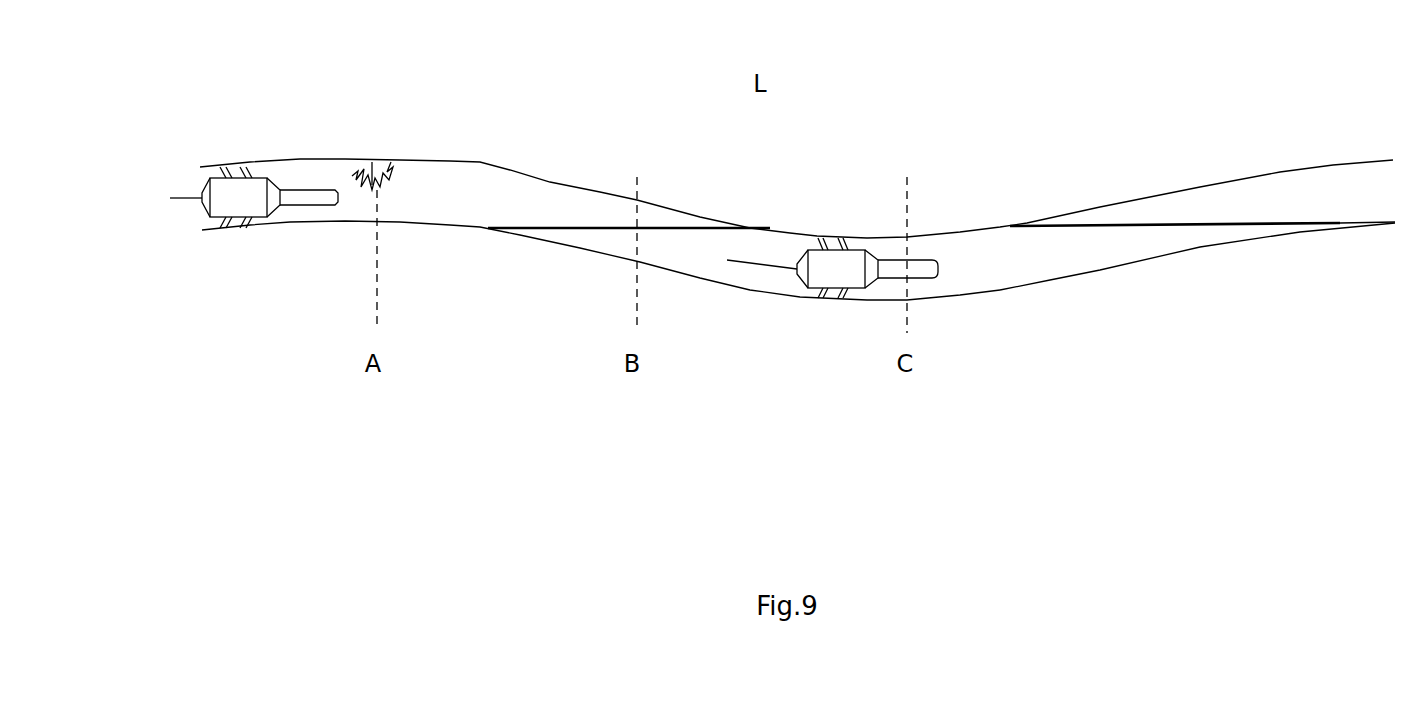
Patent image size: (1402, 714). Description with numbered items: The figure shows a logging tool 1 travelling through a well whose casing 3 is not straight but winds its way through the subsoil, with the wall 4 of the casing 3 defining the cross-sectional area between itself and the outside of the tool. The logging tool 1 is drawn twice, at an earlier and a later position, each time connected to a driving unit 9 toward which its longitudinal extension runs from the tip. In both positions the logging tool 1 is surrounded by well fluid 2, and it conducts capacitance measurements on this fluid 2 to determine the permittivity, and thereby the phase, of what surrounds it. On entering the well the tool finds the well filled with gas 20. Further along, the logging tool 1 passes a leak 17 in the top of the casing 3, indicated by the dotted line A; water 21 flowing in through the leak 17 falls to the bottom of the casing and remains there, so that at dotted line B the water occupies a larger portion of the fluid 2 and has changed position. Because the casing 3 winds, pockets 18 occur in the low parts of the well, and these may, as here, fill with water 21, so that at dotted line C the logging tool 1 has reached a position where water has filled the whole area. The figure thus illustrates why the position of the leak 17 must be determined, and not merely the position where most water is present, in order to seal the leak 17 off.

The logging tool 1 is at (315, 198).
The well fluid 2 is at (421, 204).
The casing 3 is at (537, 202).
The wall 4 is at (498, 167).
The driving unit 9 is at (243, 195).
The leak 17 is at (372, 162).
The pockets 18 is at (1017, 285).
The gas 20 is at (502, 208).
The water 21 is at (963, 273).